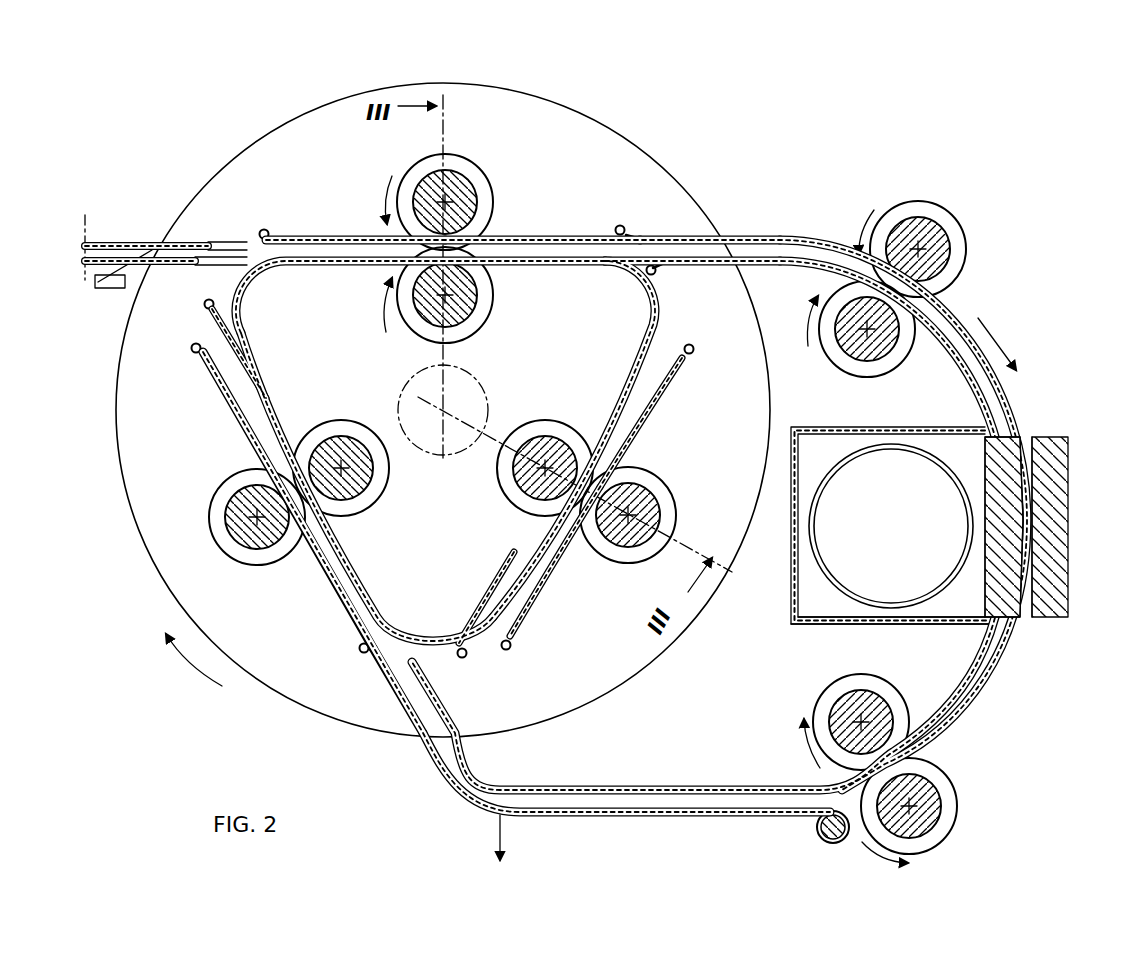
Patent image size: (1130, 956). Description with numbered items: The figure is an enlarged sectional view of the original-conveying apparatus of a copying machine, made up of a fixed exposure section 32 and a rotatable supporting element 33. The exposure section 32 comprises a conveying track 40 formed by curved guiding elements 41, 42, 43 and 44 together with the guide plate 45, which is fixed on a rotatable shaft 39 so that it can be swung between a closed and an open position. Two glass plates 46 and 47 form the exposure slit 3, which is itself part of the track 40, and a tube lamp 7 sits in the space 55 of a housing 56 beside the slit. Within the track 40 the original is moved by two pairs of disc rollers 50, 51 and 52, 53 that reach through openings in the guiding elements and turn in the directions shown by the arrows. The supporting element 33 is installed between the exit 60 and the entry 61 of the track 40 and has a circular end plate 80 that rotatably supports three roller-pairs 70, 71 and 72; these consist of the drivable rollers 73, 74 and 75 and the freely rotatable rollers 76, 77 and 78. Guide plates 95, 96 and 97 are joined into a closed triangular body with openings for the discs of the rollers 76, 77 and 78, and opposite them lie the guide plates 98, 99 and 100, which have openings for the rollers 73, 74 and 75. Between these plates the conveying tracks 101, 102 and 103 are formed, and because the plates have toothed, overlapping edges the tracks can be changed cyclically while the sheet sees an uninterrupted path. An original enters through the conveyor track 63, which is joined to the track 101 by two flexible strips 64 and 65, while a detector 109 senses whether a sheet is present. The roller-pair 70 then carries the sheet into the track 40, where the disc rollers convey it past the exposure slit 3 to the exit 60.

The exposure slit 3 is at (1027, 493).
The tube lamp 7 is at (844, 578).
The exposure section 32 is at (914, 289).
The supporting element 33 is at (274, 702).
The rotatable shaft 39 is at (816, 830).
The conveying track 40 is at (734, 239).
The guiding element 41 is at (976, 381).
The guiding element 42 is at (1010, 394).
The guiding element 43 is at (984, 644).
The guiding element 44 is at (1012, 638).
The guide plate 45 is at (562, 812).
The glass plate 46 is at (986, 452).
The glass plate 47 is at (1064, 451).
The disc roller 50 is at (894, 336).
The disc roller 51 is at (948, 223).
The disc roller 52 is at (827, 700).
The disc roller 53 is at (957, 824).
The space 55 is at (833, 419).
The housing 56 is at (791, 614).
The exit 60 is at (403, 677).
The entry 61 is at (645, 236).
The conveyor track 63 is at (110, 240).
The flexible strip 64 is at (220, 241).
The flexible strip 65 is at (226, 262).
The roller-pair 70 is at (458, 243).
The roller-pair 71 is at (610, 476).
The roller-pair 72 is at (275, 495).
The roller 73 is at (428, 170).
The roller 74 is at (673, 502).
The roller 75 is at (213, 510).
The roller 76 is at (484, 282).
The roller 77 is at (533, 429).
The roller 78 is at (319, 430).
The circular end plate 80 is at (583, 127).
The guide plate 95 is at (352, 263).
The guide plate 96 is at (640, 370).
The guide plate 97 is at (362, 573).
The guide plate 98 is at (318, 237).
The guide plate 99 is at (687, 364).
The guide plate 100 is at (342, 590).
The conveying track 101 is at (506, 239).
The conveying track 102 is at (551, 551).
The conveying track 103 is at (240, 407).
The detector 109 is at (100, 284).